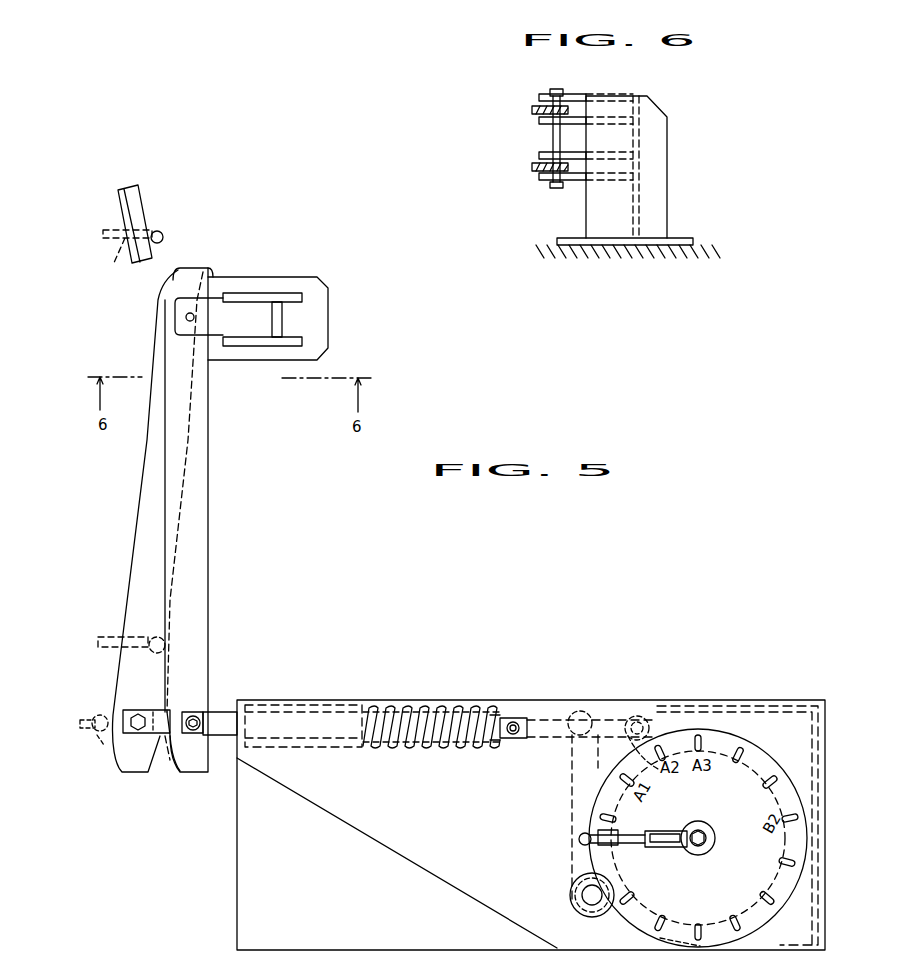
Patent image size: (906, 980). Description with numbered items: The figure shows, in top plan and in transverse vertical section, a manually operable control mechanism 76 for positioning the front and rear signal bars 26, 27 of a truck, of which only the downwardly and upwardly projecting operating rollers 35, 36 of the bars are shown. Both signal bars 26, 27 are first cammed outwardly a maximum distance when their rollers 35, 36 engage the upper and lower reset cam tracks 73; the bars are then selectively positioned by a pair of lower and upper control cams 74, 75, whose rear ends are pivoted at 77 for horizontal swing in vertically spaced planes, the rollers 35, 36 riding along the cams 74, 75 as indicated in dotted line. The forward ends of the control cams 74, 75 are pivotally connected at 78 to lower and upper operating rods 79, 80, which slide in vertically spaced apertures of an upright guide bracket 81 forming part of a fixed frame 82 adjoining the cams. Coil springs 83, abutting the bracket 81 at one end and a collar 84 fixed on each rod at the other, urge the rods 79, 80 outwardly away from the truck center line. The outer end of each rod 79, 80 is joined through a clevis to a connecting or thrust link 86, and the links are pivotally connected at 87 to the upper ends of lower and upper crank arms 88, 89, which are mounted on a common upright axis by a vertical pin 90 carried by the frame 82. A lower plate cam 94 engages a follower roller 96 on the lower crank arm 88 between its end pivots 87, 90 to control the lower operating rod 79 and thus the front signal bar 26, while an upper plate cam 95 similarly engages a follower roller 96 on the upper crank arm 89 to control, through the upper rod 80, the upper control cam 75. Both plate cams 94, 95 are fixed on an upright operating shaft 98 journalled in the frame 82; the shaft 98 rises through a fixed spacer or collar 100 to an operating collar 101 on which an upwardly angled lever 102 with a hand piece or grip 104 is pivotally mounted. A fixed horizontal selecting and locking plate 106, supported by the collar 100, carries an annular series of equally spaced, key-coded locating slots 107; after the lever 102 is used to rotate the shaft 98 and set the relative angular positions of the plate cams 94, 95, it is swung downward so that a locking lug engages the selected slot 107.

In FIG. 5, the signal bar 26 is at (97, 715).
In FIG. 5, the signal bar 27 is at (103, 637).
In FIG. 5, the operating roller 35 is at (98, 735).
In FIG. 5, the operating roller 36 is at (163, 236).
In FIG. 5, the reset cam track 73 is at (133, 200).
In FIG. 6, the lower control cam 74 is at (532, 167).
In FIG. 5, the lower control cam 74 is at (143, 540).
In FIG. 6, the upper control cam 75 is at (532, 109).
In FIG. 5, the upper control cam 75 is at (200, 582).
In FIG. 5, the mechanism 76 is at (443, 678).
In FIG. 6, the pivot 77 is at (557, 89).
In FIG. 5, the pivot 77 is at (186, 317).
In FIG. 5, the pivotal connection 78 is at (196, 720).
In FIG. 5, the lower operating rod 79 is at (175, 760).
In FIG. 5, the upper operating rod 80 is at (230, 735).
In FIG. 5, the upright guide bracket 81 is at (322, 705).
In FIG. 5, the fixed frame 82 is at (543, 930).
In FIG. 5, the coil spring 83 is at (465, 710).
In FIG. 5, the collar 84 is at (493, 750).
In FIG. 5, the connecting or thrust link 86 is at (555, 738).
In FIG. 5, the pivotal connection 87 is at (646, 718).
In FIG. 5, the lower crank arm 88 is at (572, 708).
In FIG. 5, the upper crank arm 89 is at (610, 716).
In FIG. 5, the vertical pin 90 is at (592, 900).
In FIG. 5, the plate cam 94 is at (677, 938).
In FIG. 5, the plate cam 95 is at (697, 910).
In FIG. 5, the follower roller 96 is at (605, 848).
In FIG. 5, the operating shaft 98 is at (708, 842).
In FIG. 5, the fixed spacer or collar 100 is at (713, 835).
In FIG. 5, the operating collar 101 is at (701, 830).
In FIG. 5, the lever 102 is at (646, 832).
In FIG. 5, the hand piece or grip 104 is at (579, 839).
In FIG. 5, the selecting and locking plate 106 is at (761, 759).
In FIG. 5, the locating slot 107 is at (668, 748).